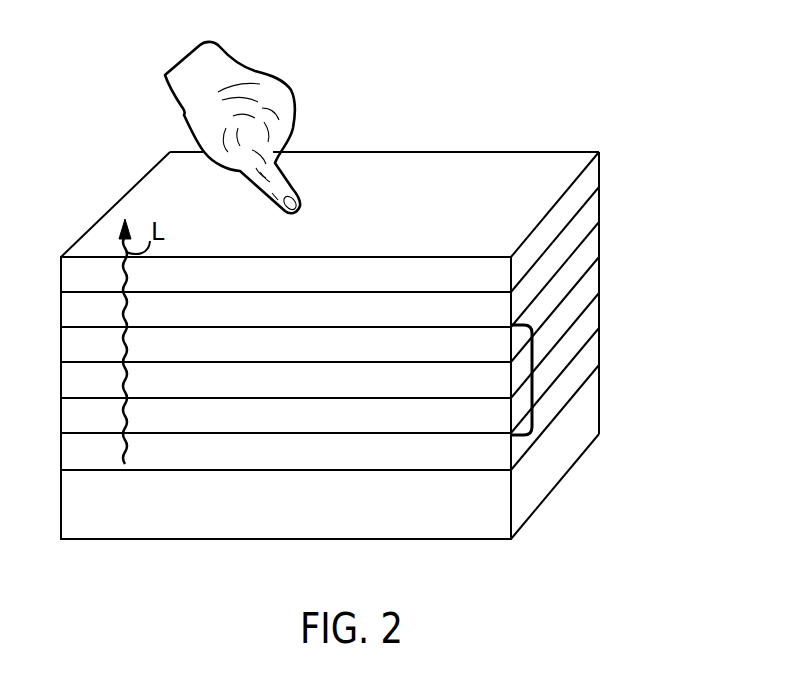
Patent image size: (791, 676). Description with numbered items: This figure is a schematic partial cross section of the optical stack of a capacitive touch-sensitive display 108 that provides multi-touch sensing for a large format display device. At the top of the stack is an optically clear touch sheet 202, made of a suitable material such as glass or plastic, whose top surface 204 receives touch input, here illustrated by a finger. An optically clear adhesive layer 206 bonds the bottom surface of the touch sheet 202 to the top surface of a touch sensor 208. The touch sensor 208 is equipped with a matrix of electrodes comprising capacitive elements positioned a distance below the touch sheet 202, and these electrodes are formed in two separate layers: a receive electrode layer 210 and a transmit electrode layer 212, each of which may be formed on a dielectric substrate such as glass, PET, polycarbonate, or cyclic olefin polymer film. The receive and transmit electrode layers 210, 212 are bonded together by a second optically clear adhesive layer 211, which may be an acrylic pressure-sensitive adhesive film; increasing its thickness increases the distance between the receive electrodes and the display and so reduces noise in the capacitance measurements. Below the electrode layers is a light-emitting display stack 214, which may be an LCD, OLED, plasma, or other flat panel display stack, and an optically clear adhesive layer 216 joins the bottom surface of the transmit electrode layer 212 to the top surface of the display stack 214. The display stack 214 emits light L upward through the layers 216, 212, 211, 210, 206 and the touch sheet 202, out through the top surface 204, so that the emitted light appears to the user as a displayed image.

The capacitive touch-sensitive display 108 is at (427, 98).
The top surface 204 is at (475, 230).
The touch sheet 202 is at (375, 284).
The optically clear adhesive layer 206 is at (327, 318).
The receive electrode layer 210 is at (318, 356).
The second optically clear adhesive layer 211 is at (325, 390).
The transmit electrode layer 212 is at (318, 426).
The optically clear adhesive layer 216 is at (327, 462).
The light-emitting display stack 214 is at (380, 516).
The touch sensor 208 is at (532, 377).